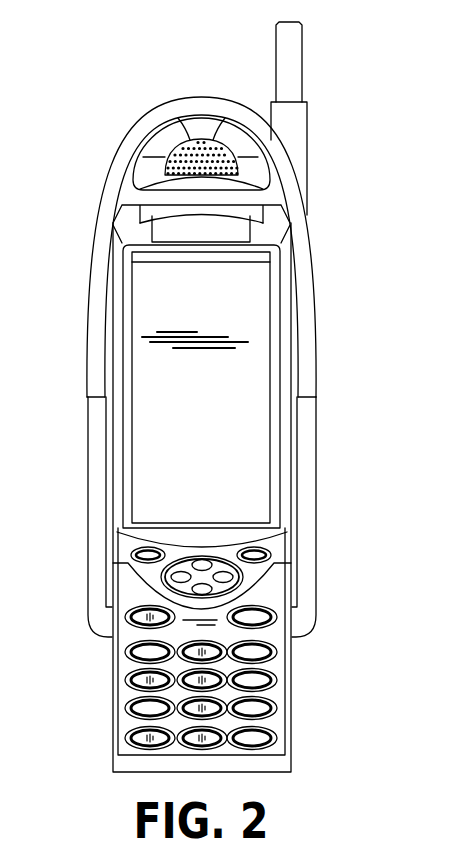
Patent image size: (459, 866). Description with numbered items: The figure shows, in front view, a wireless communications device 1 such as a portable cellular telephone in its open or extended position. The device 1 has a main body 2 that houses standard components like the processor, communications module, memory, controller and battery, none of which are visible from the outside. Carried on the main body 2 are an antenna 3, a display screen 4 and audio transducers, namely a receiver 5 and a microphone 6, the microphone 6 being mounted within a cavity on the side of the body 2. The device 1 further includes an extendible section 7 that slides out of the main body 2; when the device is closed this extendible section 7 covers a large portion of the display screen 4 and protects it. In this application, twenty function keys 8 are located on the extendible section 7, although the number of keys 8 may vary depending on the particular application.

The wireless communications device 1 is at (322, 134).
The main body 2 is at (317, 348).
The antenna 3 is at (292, 65).
The display screen 4 is at (232, 430).
The receiver 5 is at (205, 138).
The microphone 6 is at (91, 618).
The extendible section 7 is at (277, 668).
The function keys 8 is at (257, 708).